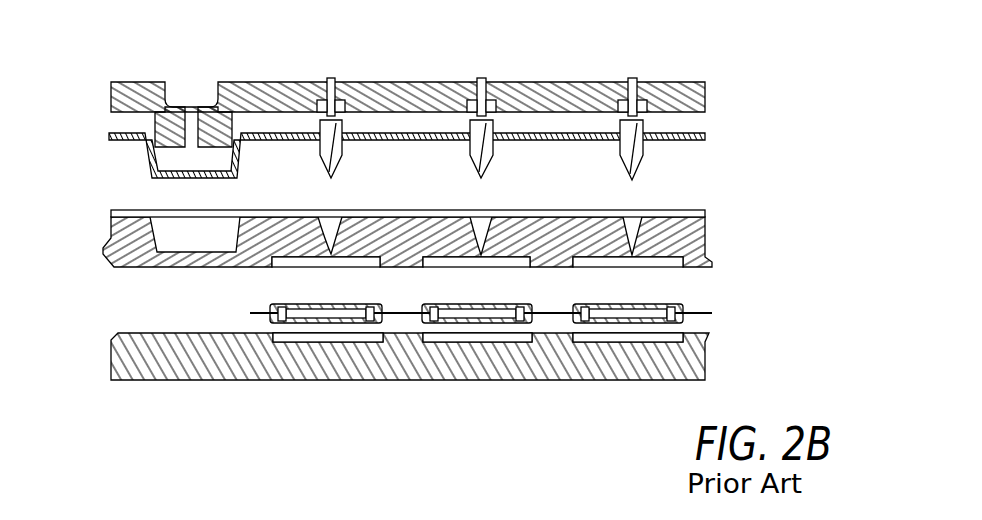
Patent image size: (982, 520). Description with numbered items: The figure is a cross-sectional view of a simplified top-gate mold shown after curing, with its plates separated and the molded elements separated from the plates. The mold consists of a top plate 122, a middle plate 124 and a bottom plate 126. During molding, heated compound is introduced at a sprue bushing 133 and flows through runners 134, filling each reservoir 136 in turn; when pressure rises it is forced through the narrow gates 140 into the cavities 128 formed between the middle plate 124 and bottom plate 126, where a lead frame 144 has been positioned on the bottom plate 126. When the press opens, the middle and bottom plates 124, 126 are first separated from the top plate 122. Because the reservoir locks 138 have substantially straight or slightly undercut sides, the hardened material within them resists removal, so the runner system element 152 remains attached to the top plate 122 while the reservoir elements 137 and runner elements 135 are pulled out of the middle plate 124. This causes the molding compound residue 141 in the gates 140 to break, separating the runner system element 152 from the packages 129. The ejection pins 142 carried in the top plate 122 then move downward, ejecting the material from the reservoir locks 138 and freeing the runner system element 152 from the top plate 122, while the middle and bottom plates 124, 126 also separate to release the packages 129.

The top plate 122 is at (111, 94).
The middle plate 124 is at (373, 222).
The bottom plate 126 is at (112, 352).
The cavities 128 is at (290, 263).
The packages 129 is at (270, 306).
The sprue bushing 133 is at (219, 93).
The runners 134 is at (660, 209).
The runner elements 135 is at (115, 141).
The reservoirs 136 is at (483, 244).
The reservoir elements 137 is at (326, 170).
The reservoir locks 138 is at (341, 101).
The gates 140 is at (331, 251).
The molding compound residue 141 is at (477, 177).
The ejection pins 142 is at (331, 78).
The lead frame 144 is at (441, 301).
The runner system element 152 is at (706, 135).